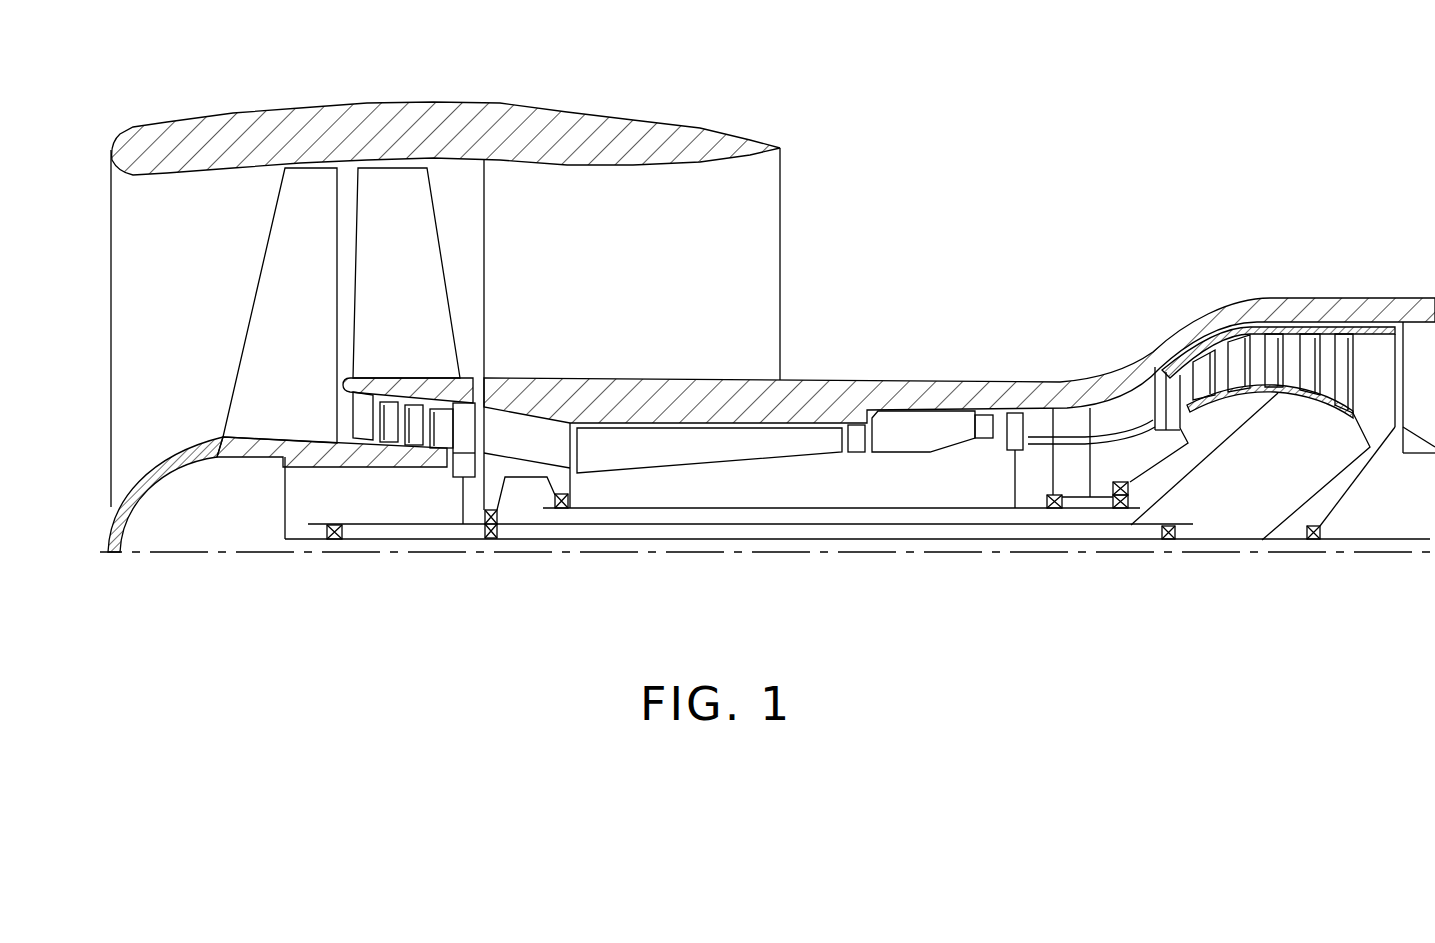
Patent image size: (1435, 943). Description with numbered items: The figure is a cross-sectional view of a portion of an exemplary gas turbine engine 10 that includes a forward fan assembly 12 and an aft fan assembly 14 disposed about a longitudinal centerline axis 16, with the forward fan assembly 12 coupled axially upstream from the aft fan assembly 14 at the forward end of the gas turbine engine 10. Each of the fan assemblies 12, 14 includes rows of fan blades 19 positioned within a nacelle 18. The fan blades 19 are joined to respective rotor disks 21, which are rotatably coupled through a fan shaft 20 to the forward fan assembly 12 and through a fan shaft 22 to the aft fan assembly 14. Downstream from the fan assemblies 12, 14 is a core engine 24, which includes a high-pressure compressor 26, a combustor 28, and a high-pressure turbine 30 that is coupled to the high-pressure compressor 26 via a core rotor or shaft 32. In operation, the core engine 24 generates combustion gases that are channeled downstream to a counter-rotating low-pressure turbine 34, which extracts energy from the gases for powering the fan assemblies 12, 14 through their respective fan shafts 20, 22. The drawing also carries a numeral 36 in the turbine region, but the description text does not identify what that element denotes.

The gas turbine engine 10 is at (826, 203).
The forward fan assembly 12 is at (252, 258).
The aft fan assembly 14 is at (447, 273).
The longitudinal centerline axis 16 is at (145, 554).
The nacelle 18 is at (663, 122).
The fan blades 19 is at (298, 324).
The fan shaft 20 is at (365, 528).
The rotor disks 21 is at (392, 377).
The fan shaft 22 is at (520, 524).
The core engine 24 is at (910, 348).
The high-pressure compressor 26 is at (703, 448).
The combustor 28 is at (931, 444).
The high-pressure turbine 30 is at (1027, 430).
The core rotor or shaft 32 is at (892, 507).
The counter-rotating low-pressure turbine 34 is at (1320, 261).
The low pressure turbine 36 is at (1150, 340).